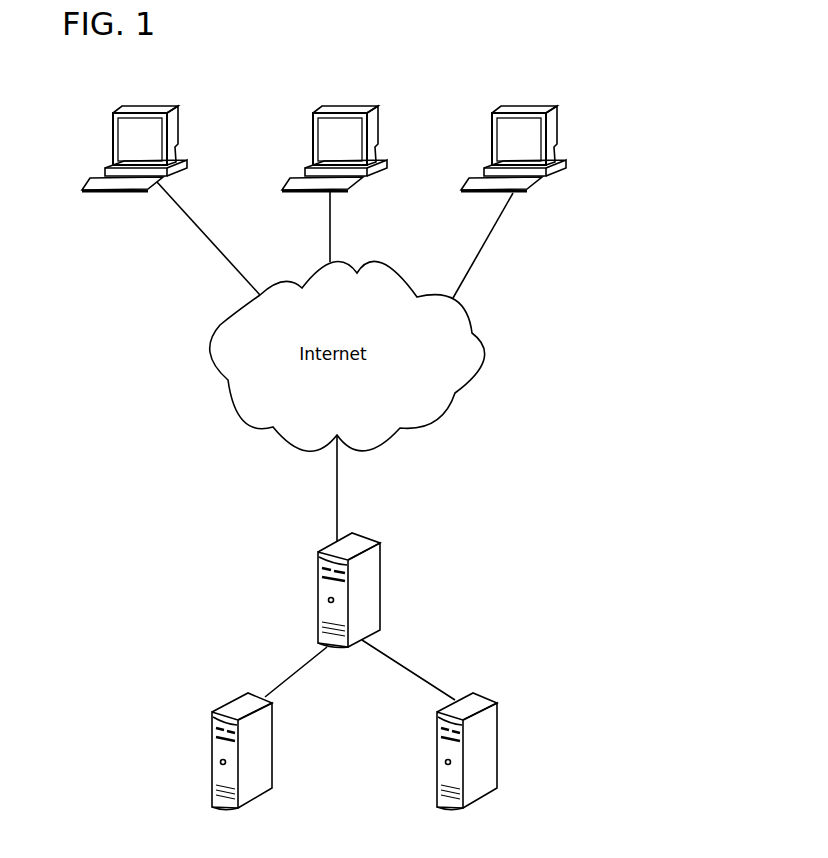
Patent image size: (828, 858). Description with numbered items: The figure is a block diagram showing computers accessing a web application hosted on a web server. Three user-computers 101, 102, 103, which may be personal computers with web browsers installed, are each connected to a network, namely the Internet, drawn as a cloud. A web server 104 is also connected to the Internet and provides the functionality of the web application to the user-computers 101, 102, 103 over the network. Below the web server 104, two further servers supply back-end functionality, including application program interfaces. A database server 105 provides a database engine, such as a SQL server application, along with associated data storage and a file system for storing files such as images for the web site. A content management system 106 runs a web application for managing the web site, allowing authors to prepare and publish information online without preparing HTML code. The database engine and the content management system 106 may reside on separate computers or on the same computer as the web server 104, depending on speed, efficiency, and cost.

The user-computer 101 is at (182, 122).
The user-computer 102 is at (386, 120).
The user-computer 103 is at (562, 122).
The web server 104 is at (367, 542).
The database server 105 is at (500, 725).
The content management system 106 is at (210, 722).